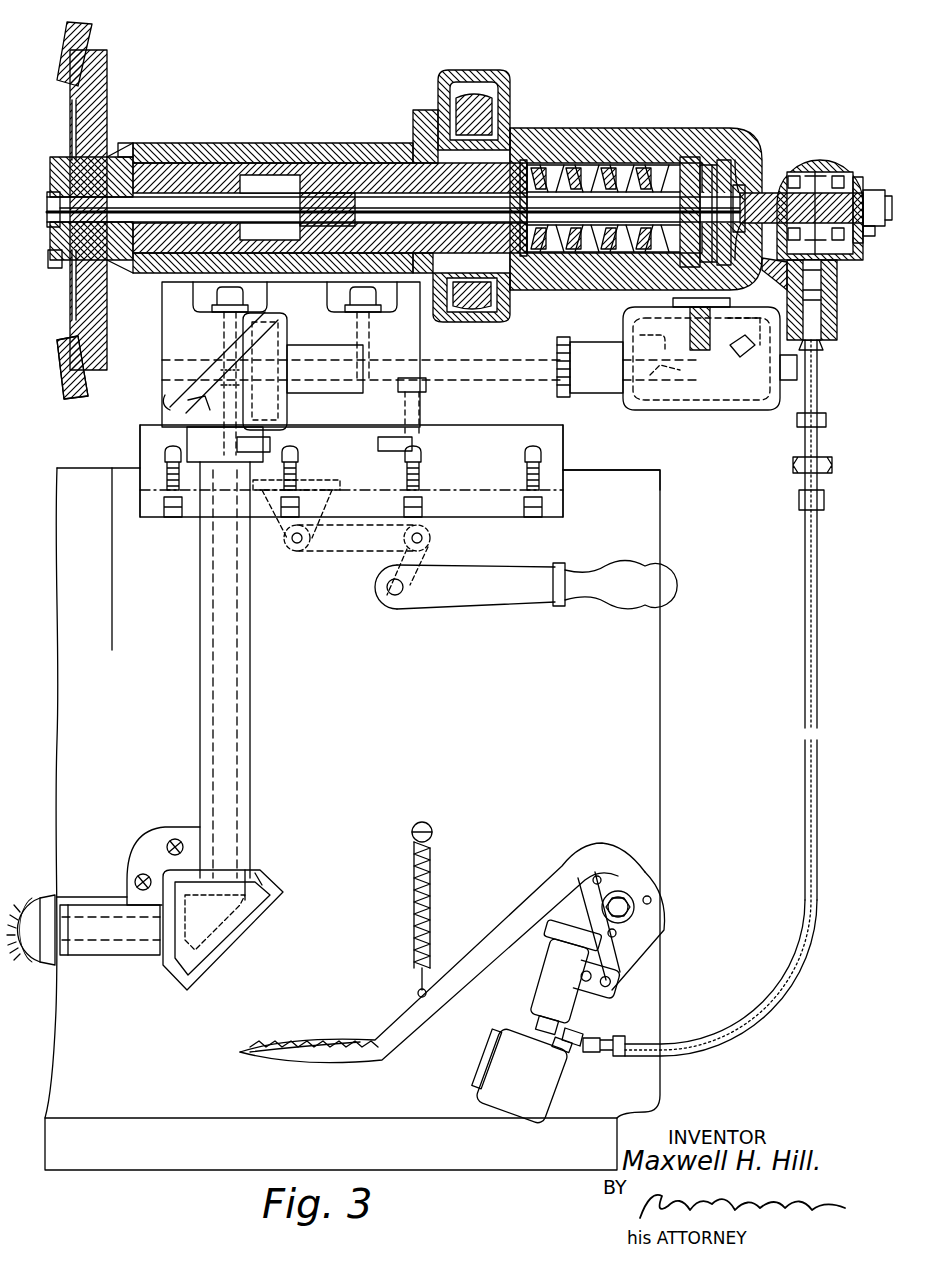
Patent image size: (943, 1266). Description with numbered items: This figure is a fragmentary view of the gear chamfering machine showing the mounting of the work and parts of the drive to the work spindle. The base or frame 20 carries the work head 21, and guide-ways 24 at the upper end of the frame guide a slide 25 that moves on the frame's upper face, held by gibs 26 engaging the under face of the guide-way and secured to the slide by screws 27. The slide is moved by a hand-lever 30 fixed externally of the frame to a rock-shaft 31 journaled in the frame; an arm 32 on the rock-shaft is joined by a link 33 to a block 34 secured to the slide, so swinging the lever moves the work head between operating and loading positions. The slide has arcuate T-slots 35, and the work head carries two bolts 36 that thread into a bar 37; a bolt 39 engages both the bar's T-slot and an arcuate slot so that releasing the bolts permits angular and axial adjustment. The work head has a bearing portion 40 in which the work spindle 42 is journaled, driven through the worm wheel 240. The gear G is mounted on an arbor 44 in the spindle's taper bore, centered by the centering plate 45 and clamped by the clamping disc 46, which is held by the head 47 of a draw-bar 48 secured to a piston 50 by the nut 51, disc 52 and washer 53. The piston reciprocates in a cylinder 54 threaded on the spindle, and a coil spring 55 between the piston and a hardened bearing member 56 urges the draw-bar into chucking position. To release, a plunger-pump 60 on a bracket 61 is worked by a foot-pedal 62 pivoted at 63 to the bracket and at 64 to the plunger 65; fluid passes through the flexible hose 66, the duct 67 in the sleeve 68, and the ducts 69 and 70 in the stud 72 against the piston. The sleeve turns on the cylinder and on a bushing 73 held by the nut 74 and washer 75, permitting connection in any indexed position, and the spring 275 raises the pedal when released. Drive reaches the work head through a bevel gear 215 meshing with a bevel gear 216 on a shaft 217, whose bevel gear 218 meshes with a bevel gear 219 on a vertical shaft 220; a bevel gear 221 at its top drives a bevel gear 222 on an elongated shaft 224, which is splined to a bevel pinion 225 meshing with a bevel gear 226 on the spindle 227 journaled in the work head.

The gear G is at (90, 26).
The base or frame 20 is at (658, 716).
The work head 21 is at (165, 346).
The guide-ways 24 is at (612, 472).
The slide 25 is at (495, 436).
The gibs 26 is at (498, 510).
The screws 27 is at (528, 510).
The hand-lever 30 is at (512, 598).
The rock-shaft 31 is at (394, 598).
The arm 32 is at (424, 562).
The link 33 is at (352, 551).
The block 34 is at (283, 538).
The arcuate T-slots 35 is at (272, 444).
The bolts 36 is at (222, 323).
The bar 37 is at (412, 386).
The bolt 39 is at (388, 432).
The bearing portion 40 is at (300, 145).
The work spindle 42 is at (352, 165).
The arbor 44 is at (112, 165).
The centering plate 45 is at (112, 124).
The clamping disc 46 is at (64, 298).
The head 47 is at (52, 260).
The draw-bar 48 is at (272, 204).
The piston 50 is at (655, 165).
The nut 51 is at (758, 180).
The disc 52 is at (725, 170).
The washer 53 is at (695, 170).
The cylinder 54 is at (618, 145).
The coil spring 55 is at (620, 165).
The hardened bearing member 56 is at (527, 175).
The plunger-pump 60 is at (545, 988).
The bracket 61 is at (622, 950).
The foot-pedal 62 is at (440, 995).
The pivot connection 63 is at (632, 905).
The pivot connection 64 is at (598, 875).
The plunger 65 is at (580, 915).
The flexible hose 66 is at (804, 642).
The duct 67 is at (835, 256).
The sleeve 68 is at (828, 165).
The duct 69 is at (790, 252).
The duct 70 is at (815, 160).
The stud 72 is at (778, 192).
The bushing 73 is at (865, 185).
The nut 74 is at (880, 200).
The washer 75 is at (872, 232).
The bevel gear 215 is at (36, 975).
The bevel gear 216 is at (55, 898).
The shaft 217 is at (135, 930).
The bevel gear 218 is at (180, 940).
The bevel gear 219 is at (272, 880).
The vertical shaft 220 is at (250, 760).
The bevel gear 221 is at (185, 402).
The bevel gear 222 is at (266, 343).
The elongated shaft 224 is at (508, 372).
The bevel pinion 225 is at (672, 387).
The bevel gear 226 is at (740, 335).
The spindle 227 is at (676, 302).
The worm wheel 240 is at (505, 105).
The spring 275 is at (432, 892).